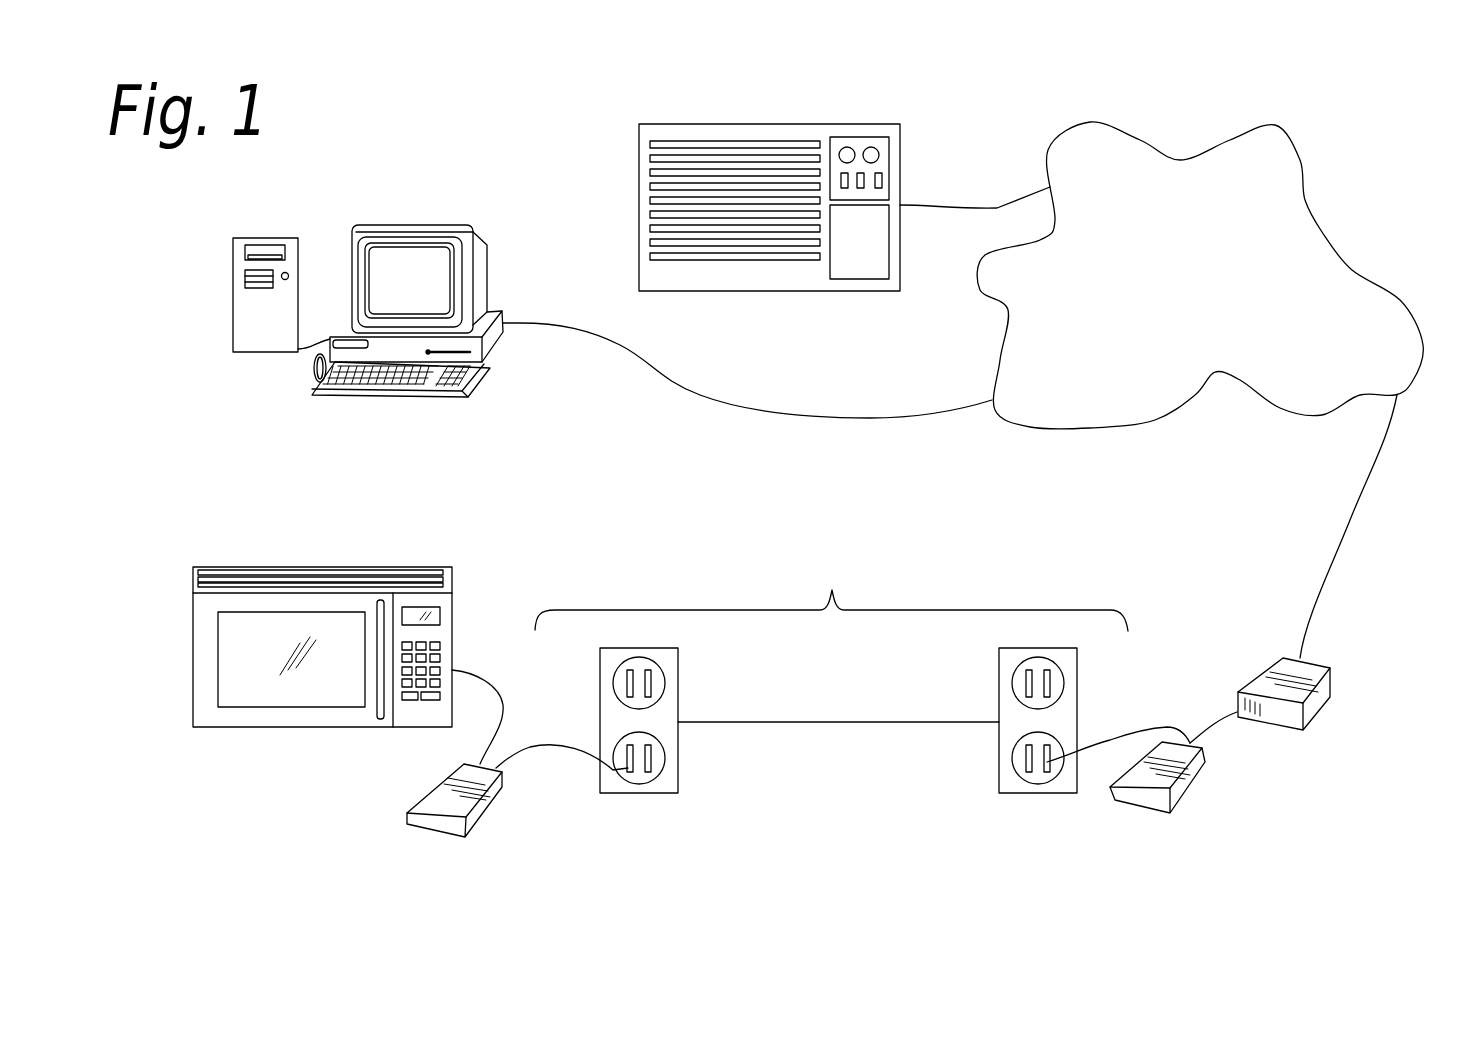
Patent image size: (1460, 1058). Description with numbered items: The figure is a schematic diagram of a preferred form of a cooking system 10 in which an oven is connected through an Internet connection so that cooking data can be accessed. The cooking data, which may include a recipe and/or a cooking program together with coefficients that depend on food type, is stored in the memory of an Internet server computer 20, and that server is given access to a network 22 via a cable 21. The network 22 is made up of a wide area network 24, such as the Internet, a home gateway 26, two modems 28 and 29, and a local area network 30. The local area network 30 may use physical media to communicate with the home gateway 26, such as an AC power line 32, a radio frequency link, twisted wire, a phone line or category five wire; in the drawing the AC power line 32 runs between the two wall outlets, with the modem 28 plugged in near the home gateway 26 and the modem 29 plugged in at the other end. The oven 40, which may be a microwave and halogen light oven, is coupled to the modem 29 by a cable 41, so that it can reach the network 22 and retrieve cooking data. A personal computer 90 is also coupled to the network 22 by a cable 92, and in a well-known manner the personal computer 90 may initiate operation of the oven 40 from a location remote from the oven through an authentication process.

The cooking system 10 is at (545, 808).
The Internet server computer 20 is at (643, 152).
The cable 21 is at (993, 207).
The network 22 is at (1357, 131).
The wide area network 24 is at (1328, 232).
The home gateway 26 is at (1273, 663).
The modem 28 is at (1168, 743).
The modem 29 is at (410, 807).
The local area network 30 is at (792, 796).
The AC power line 32 is at (948, 722).
The oven 40 is at (204, 625).
The cable 41 is at (477, 677).
The personal computer 90 is at (352, 232).
The cable 92 is at (645, 366).